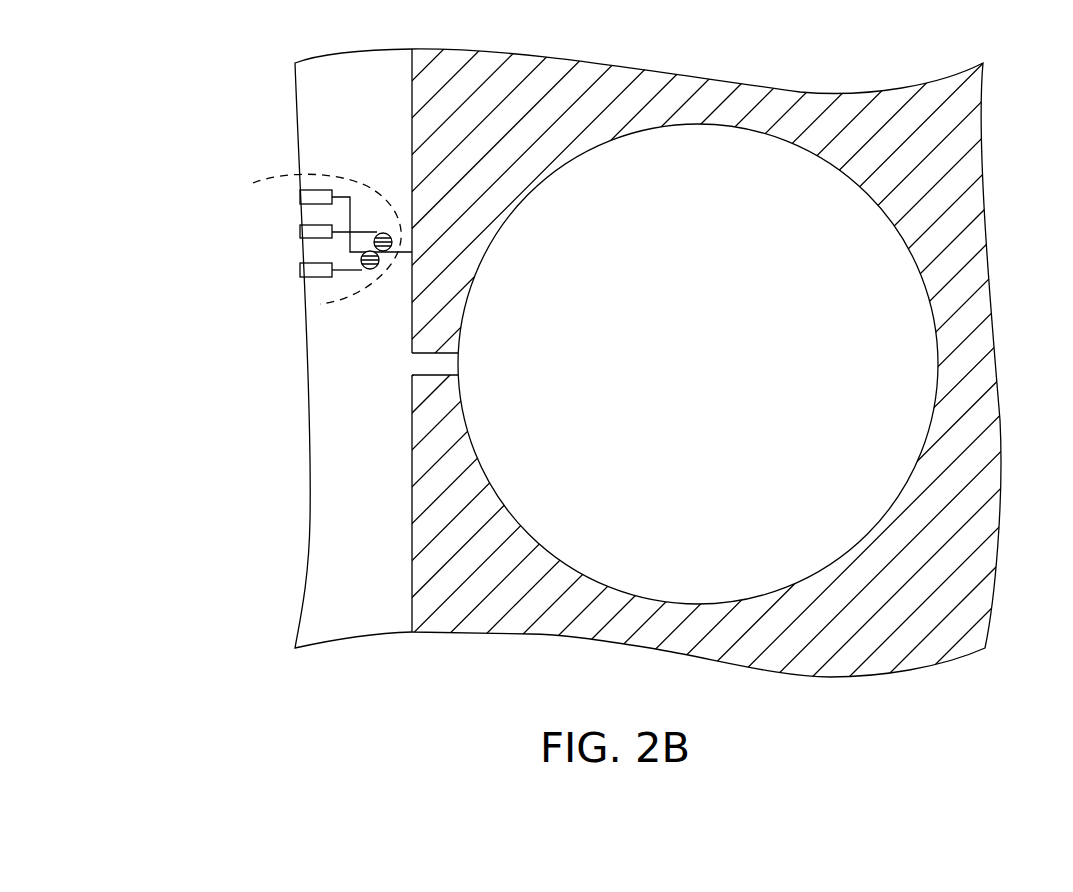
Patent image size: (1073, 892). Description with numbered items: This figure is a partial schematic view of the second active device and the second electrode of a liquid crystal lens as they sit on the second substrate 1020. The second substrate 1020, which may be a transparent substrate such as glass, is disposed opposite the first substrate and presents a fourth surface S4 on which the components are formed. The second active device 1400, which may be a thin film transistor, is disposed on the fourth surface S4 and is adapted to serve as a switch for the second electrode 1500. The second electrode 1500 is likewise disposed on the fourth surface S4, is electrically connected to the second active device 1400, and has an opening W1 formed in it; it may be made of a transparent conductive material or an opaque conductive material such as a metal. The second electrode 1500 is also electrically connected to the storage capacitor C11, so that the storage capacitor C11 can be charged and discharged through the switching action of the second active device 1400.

The second substrate 1020 is at (318, 97).
The storage capacitor C11 is at (309, 233).
The second active device 1400 is at (320, 304).
The opening W1 is at (900, 427).
The fourth surface S4 is at (350, 490).
The second electrode 1500 is at (990, 552).